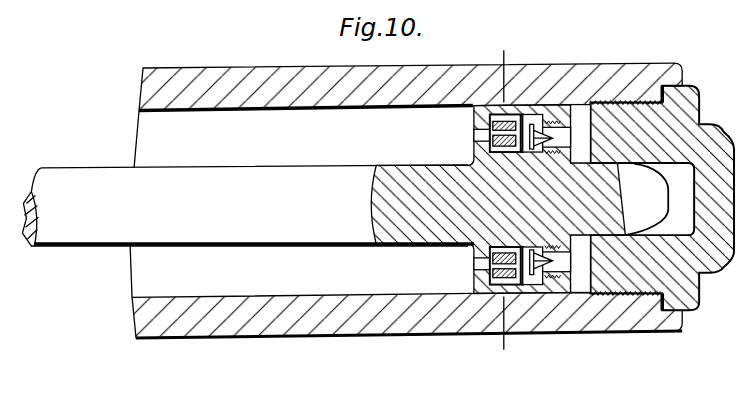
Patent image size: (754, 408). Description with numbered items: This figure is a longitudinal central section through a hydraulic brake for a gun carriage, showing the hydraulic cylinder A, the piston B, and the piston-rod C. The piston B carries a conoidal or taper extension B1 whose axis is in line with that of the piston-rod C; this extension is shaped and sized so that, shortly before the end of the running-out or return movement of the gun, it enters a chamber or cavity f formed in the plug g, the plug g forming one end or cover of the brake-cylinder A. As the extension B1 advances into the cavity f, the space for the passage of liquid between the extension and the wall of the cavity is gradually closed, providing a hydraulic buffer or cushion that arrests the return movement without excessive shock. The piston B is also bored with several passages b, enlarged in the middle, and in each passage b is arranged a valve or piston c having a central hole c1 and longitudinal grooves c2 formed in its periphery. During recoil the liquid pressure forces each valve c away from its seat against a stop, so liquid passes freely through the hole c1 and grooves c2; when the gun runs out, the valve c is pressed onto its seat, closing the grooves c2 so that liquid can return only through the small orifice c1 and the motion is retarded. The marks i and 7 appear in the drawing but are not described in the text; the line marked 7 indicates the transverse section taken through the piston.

The hydraulic cylinder A is at (406, 192).
The piston-rod C is at (247, 205).
The piston B is at (498, 199).
The conoidal or taper extension B1 is at (646, 199).
The chamber or cavity f is at (627, 199).
The plug g is at (668, 198).
The passages b is at (471, 133).
The valve or piston c is at (505, 150).
The central hole c1 is at (466, 264).
The longitudinal grooves c2 is at (503, 118).
The plug i is at (531, 139).
The section line 7 is at (505, 205).